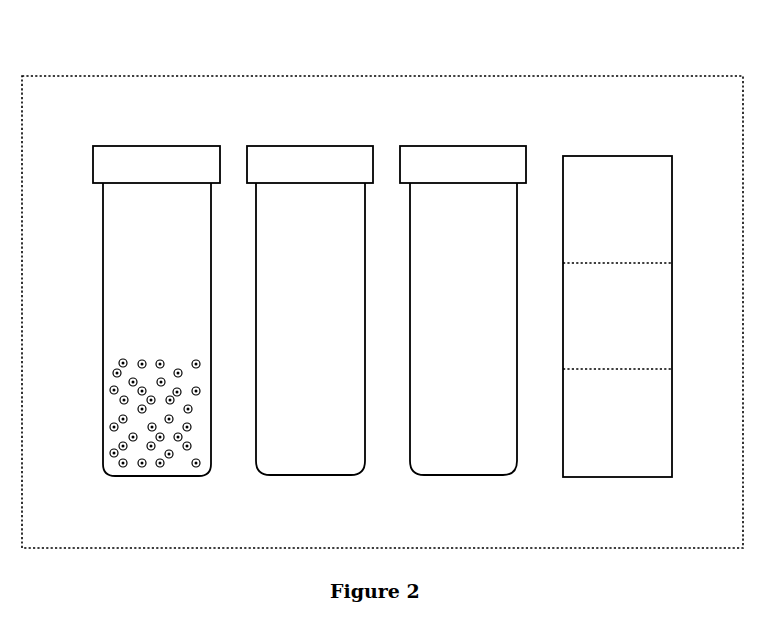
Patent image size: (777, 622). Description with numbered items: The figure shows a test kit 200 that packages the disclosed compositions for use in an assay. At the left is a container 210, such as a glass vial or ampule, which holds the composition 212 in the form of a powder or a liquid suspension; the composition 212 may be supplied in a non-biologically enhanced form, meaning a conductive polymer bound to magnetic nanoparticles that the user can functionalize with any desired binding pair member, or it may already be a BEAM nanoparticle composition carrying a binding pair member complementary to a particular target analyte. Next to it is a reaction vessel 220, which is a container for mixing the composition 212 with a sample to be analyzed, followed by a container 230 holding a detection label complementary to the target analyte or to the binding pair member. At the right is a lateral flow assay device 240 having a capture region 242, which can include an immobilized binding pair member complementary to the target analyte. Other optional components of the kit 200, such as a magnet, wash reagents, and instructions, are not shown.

The kit 200 is at (131, 68).
The container 210 is at (102, 250).
The composition 212 is at (122, 365).
The reaction vessel 220 is at (308, 478).
The container 230 is at (462, 478).
The lateral flow assay device 240 is at (615, 479).
The capture region 242 is at (661, 335).